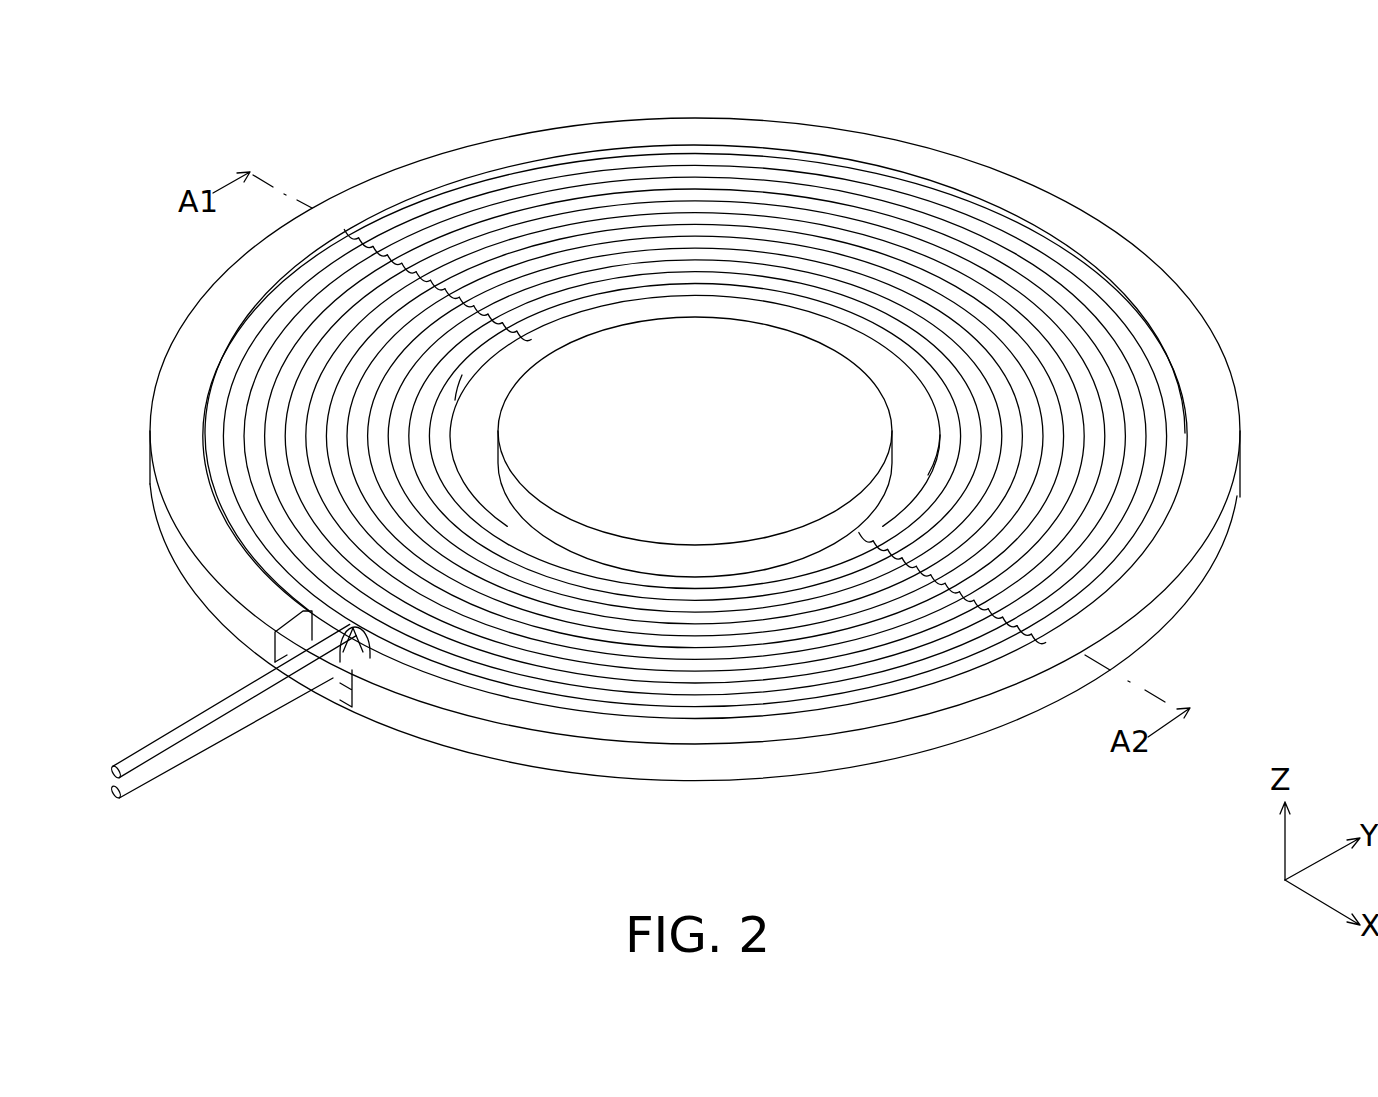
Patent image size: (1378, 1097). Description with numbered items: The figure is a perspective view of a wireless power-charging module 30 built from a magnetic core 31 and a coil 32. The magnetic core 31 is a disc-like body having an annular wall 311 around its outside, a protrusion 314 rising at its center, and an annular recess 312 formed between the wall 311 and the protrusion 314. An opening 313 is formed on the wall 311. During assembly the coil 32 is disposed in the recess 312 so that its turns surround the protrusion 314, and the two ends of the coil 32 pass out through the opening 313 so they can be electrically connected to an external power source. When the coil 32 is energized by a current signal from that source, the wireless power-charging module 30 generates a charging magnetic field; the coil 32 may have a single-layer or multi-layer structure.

The wireless power-charging module 30 is at (179, 70).
The magnetic core 31 is at (148, 463).
The annular wall 311 is at (1165, 297).
The annular recess 312 is at (1148, 536).
The opening 313 is at (340, 688).
The protrusion 314 is at (783, 368).
The coil 32 is at (240, 488).